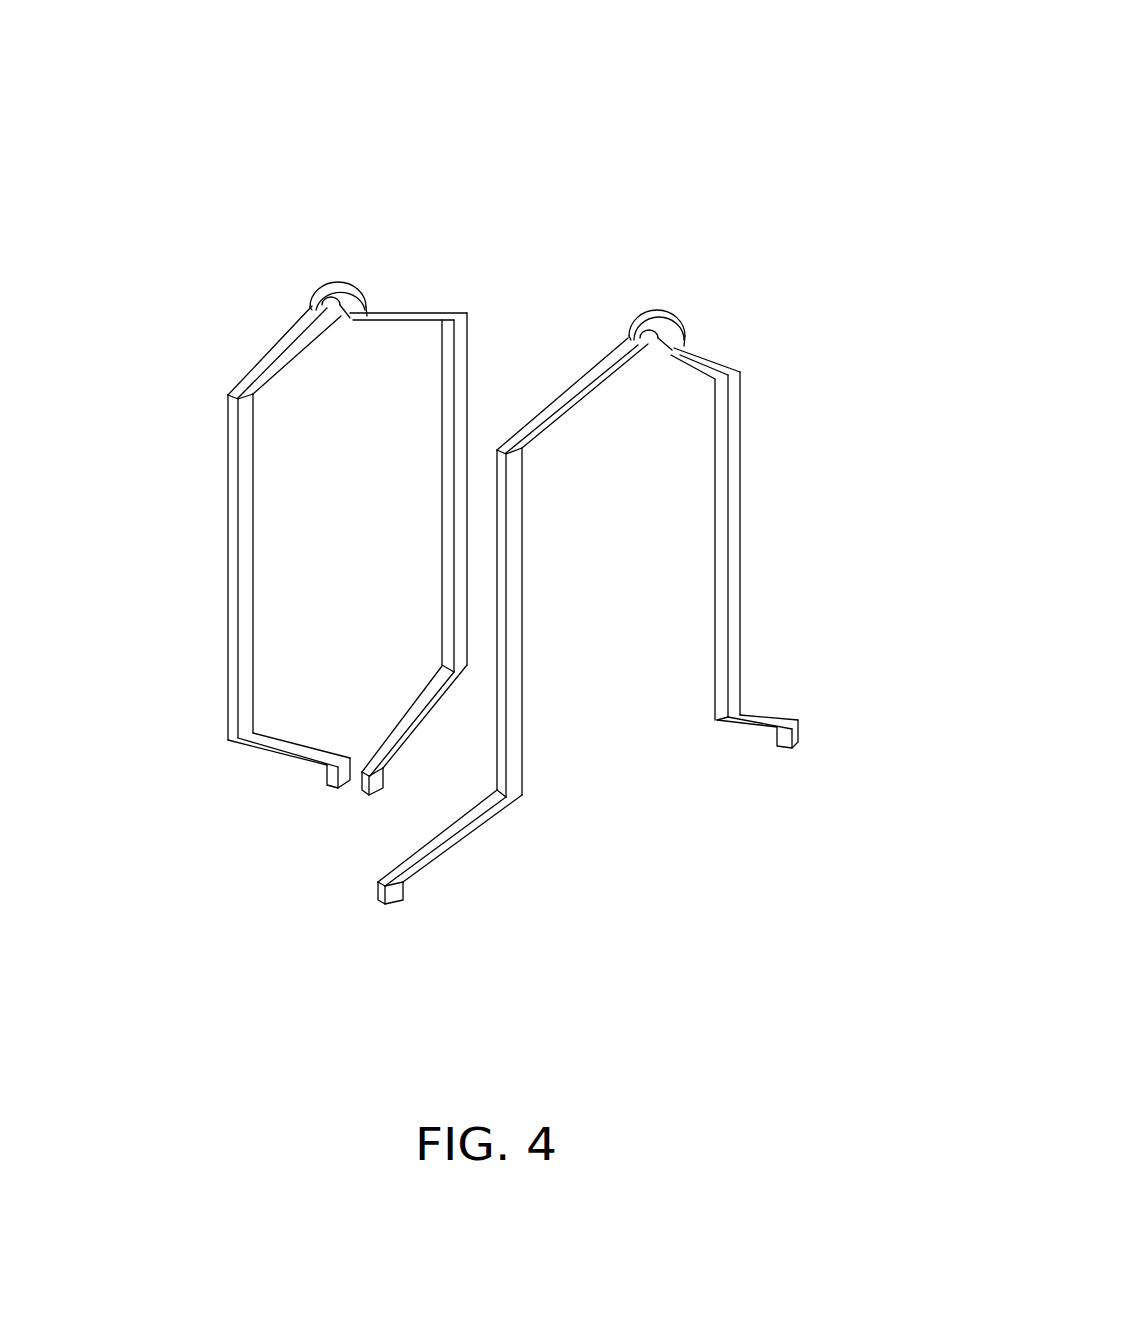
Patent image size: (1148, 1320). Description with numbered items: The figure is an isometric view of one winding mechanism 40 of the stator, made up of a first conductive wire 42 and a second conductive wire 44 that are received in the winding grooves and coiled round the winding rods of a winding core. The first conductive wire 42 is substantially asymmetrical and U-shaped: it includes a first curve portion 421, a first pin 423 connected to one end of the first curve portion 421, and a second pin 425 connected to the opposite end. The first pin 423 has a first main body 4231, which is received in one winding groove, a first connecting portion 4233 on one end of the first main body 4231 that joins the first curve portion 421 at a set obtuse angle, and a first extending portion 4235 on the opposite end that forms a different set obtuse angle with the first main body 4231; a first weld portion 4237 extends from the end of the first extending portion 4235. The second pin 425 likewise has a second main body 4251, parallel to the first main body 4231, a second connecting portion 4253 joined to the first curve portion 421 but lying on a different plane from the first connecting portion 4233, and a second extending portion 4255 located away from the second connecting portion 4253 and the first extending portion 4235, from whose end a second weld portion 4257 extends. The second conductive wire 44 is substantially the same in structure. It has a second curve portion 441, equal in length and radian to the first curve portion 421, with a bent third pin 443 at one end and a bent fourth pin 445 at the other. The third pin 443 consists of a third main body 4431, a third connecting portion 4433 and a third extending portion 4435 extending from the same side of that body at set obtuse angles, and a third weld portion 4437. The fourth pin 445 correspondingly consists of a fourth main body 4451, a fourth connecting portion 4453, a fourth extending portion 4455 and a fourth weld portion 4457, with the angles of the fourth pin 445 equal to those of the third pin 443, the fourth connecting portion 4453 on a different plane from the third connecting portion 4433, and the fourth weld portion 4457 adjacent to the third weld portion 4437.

The winding mechanism 40 is at (432, 76).
The second conductive wire 44 is at (437, 313).
The second curve portion 441 is at (347, 292).
The third pin 443 is at (326, 648).
The third main body 4431 is at (450, 459).
The third connecting portion 4433 is at (433, 322).
The third extending portion 4435 is at (437, 690).
The third weld portion 4437 is at (367, 790).
The fourth pin 445 is at (143, 668).
The fourth main body 4451 is at (243, 491).
The fourth connecting portion 4453 is at (250, 378).
The fourth extending portion 4455 is at (282, 737).
The fourth weld portion 4457 is at (333, 777).
The first conductive wire 42 is at (707, 346).
The first curve portion 421 is at (665, 316).
The first pin 423 is at (842, 340).
The first main body 4231 is at (733, 481).
The first connecting portion 4233 is at (722, 368).
The first extending portion 4235 is at (770, 720).
The first weld portion 4237 is at (787, 741).
The second pin 425 is at (637, 446).
The second main body 4251 is at (519, 599).
The second connecting portion 4253 is at (526, 448).
The second extending portion 4255 is at (453, 822).
The second weld portion 4257 is at (395, 898).